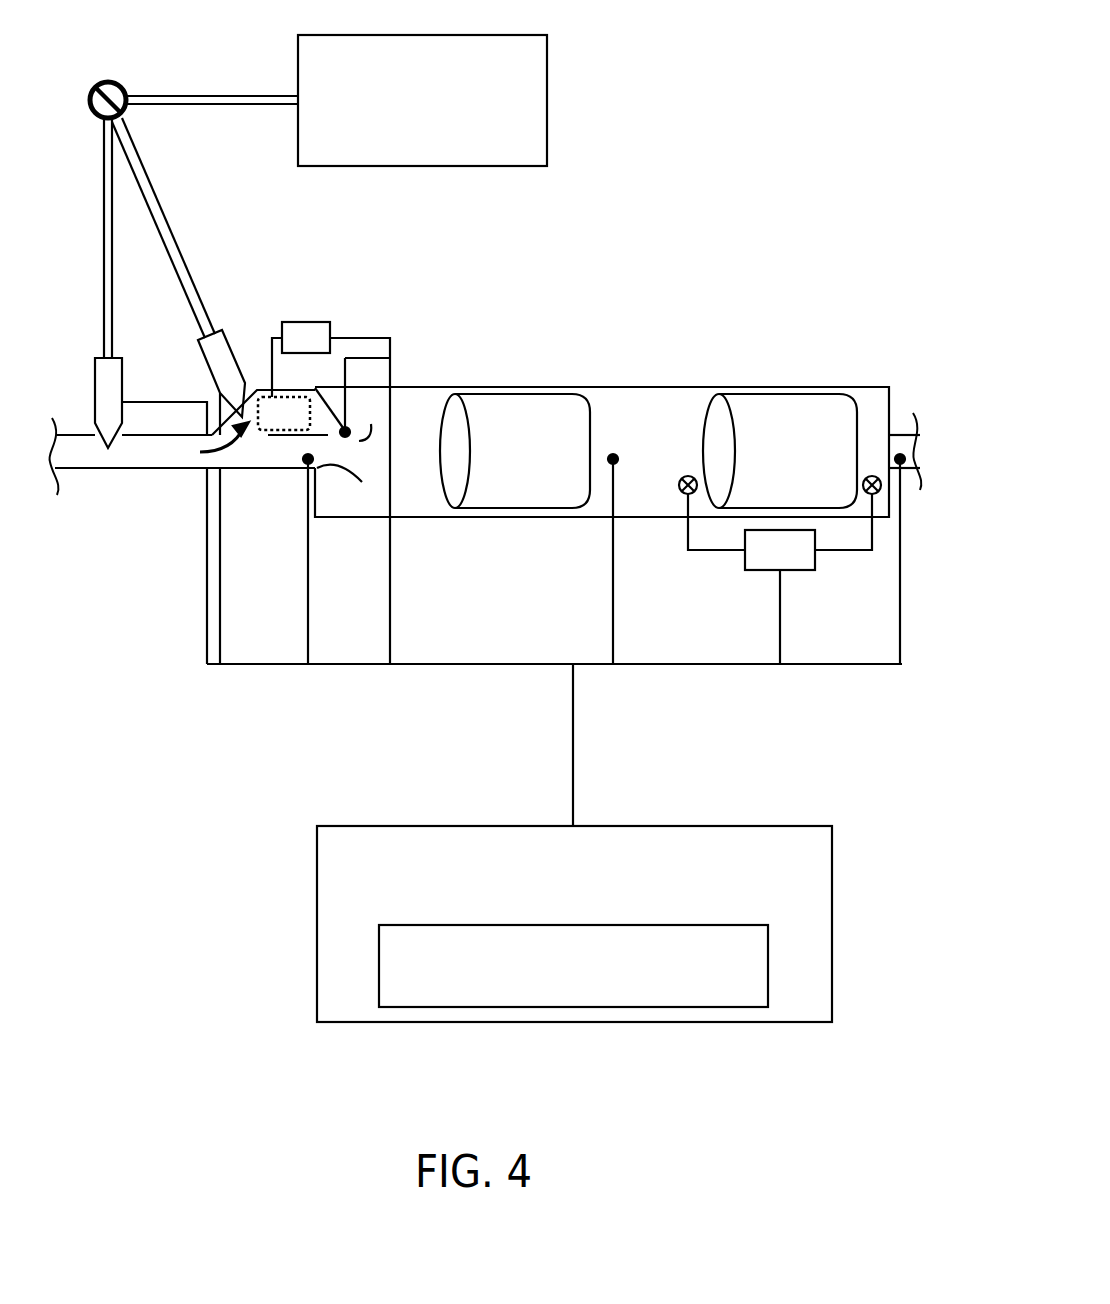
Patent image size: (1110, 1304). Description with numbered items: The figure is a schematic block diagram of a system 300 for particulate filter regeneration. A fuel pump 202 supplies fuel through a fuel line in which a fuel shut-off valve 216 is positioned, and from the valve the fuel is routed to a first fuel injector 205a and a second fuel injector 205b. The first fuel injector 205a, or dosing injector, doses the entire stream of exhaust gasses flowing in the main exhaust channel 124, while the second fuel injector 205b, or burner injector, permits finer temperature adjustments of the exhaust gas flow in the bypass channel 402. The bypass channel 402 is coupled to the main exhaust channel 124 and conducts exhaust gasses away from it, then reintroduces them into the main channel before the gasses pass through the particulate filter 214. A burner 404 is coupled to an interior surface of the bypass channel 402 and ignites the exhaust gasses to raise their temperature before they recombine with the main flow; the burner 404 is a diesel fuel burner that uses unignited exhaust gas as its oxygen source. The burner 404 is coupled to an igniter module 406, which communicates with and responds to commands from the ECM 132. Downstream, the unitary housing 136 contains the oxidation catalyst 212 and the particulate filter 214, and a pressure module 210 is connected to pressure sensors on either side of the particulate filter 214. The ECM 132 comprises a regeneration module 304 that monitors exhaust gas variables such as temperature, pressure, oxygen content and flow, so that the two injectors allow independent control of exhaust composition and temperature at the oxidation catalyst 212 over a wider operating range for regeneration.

The system for particulate filter regeneration 300 is at (743, 68).
The fuel pump 202 is at (422, 100).
The fuel shut-off valve 216 is at (124, 86).
The first fuel injector 205a is at (122, 392).
The second fuel injector 205b is at (222, 328).
The main exhaust channel 124 is at (118, 470).
The bypass channel 402 is at (202, 442).
The burner 404 is at (267, 437).
The igniter module 406 is at (320, 322).
The unitary housing 136 is at (545, 387).
The oxidation catalyst 212 is at (515, 451).
The particulate filter 214 is at (780, 451).
The pressure module 210 is at (780, 570).
The ECM 132 is at (574, 924).
The regeneration module 304 is at (573, 966).